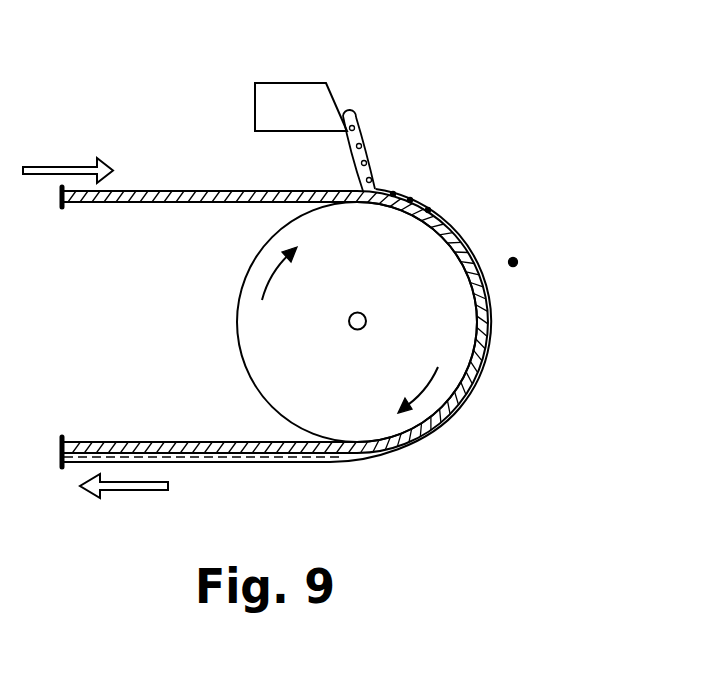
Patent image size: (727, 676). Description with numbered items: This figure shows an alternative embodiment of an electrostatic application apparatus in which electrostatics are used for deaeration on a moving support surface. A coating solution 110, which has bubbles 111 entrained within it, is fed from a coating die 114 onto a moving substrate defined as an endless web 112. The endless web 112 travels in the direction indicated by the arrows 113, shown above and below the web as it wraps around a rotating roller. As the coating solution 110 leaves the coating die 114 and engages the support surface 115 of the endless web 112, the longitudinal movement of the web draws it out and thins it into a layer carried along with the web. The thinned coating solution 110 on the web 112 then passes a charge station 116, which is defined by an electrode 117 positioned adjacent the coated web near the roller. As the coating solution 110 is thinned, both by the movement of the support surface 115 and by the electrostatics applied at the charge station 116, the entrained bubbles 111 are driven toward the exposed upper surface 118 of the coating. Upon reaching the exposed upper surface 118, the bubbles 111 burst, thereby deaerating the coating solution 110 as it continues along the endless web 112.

The coating solution 110 is at (367, 163).
The bubbles 111 is at (363, 142).
The endless web 112 is at (231, 190).
The arrows 113 is at (38, 162).
The coating die 114 is at (297, 92).
The support surface 115 is at (157, 192).
The charge station 116 is at (508, 240).
The electrode 117 is at (515, 266).
The exposed upper surface 118 is at (450, 222).